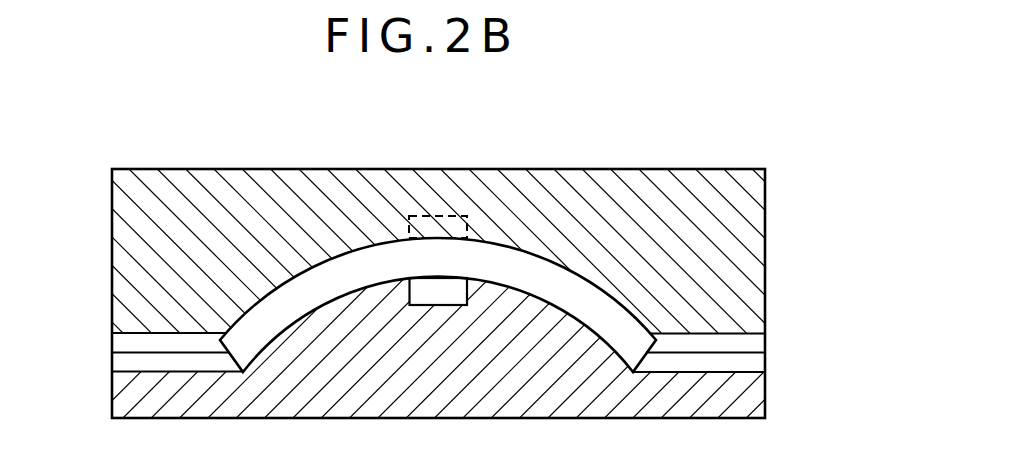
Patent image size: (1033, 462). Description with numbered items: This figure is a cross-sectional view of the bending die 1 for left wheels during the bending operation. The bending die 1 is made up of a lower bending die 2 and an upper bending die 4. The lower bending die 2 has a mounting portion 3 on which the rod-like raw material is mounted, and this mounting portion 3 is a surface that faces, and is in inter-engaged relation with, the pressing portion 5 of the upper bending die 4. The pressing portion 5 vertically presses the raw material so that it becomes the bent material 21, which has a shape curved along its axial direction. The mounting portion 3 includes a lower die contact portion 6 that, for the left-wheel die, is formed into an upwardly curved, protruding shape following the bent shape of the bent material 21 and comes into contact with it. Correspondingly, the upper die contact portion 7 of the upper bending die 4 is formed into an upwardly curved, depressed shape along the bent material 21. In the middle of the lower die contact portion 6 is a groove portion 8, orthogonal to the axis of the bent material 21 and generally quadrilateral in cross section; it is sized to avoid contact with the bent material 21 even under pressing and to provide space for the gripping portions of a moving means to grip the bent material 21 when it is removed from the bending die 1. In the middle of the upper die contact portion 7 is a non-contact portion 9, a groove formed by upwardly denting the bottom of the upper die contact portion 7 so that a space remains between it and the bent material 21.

The bending die 1 is at (216, 148).
The lower bending die 2 is at (112, 407).
The mounting portion 3 is at (153, 353).
The upper bending die 4 is at (112, 188).
The pressing portion 5 is at (720, 356).
The lower die contact portion 6 is at (577, 335).
The upper die contact portion 7 is at (548, 265).
The groove portion 8 is at (447, 305).
The non-contact portion 9 is at (431, 216).
The bent material 21 is at (305, 287).